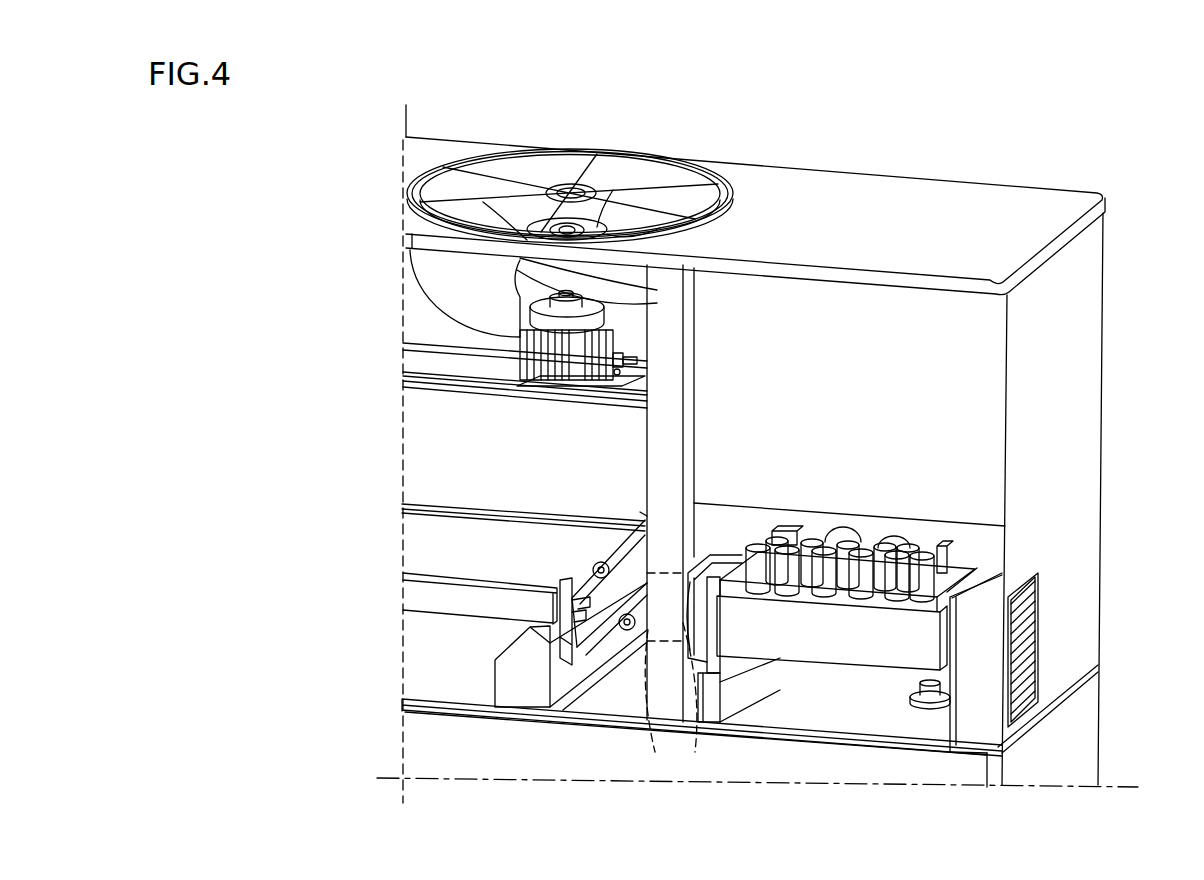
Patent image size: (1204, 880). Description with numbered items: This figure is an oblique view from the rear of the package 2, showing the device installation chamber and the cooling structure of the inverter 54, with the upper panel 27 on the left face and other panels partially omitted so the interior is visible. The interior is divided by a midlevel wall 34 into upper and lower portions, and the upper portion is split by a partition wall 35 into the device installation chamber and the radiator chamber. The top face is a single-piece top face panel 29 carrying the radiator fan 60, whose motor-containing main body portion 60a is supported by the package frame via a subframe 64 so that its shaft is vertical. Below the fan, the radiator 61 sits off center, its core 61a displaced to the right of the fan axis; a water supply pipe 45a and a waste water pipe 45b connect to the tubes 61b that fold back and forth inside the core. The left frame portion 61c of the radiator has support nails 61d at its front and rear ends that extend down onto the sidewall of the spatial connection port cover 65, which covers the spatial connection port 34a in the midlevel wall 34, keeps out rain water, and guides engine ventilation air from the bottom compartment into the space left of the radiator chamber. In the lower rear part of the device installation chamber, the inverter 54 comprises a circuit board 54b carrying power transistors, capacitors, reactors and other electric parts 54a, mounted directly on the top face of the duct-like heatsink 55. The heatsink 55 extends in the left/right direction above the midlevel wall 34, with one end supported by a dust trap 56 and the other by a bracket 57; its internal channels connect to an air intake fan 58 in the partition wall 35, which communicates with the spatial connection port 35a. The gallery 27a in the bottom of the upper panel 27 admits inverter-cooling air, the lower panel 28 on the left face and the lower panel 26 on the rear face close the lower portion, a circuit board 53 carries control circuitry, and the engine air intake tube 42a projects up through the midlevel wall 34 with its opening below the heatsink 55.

The package 2 is at (907, 172).
The top face panel 29 is at (770, 190).
The circuit board 53 is at (890, 318).
The upper panel 27 is at (1075, 378).
The gallery 27a is at (1027, 647).
The lower panel 28 is at (1070, 747).
The lower panel 26 is at (592, 762).
The midlevel wall 34 is at (611, 704).
The spatial connection port 34a is at (535, 690).
The partition wall 35 is at (693, 525).
The spatial connection port 35a is at (657, 752).
The radiator fan 60 is at (438, 295).
The main body portion 60a is at (567, 362).
The subframe 64 is at (423, 387).
The radiator 61 is at (425, 508).
The core 61a is at (452, 540).
The tubes 61b is at (565, 582).
The left frame portion 61c is at (640, 520).
The support nails 61d is at (548, 628).
The water supply pipe 45a is at (600, 547).
The waste water pipe 45b is at (617, 543).
The spatial connection port cover 65 is at (493, 668).
The inverter 54 is at (968, 563).
The electric parts 54a is at (893, 540).
The circuit board 54b is at (948, 555).
The heatsink 55 is at (825, 633).
The dust trap 56 is at (977, 703).
The air intake tube 42a is at (935, 705).
The air intake fan 58 is at (703, 617).
The bracket 57 is at (723, 683).